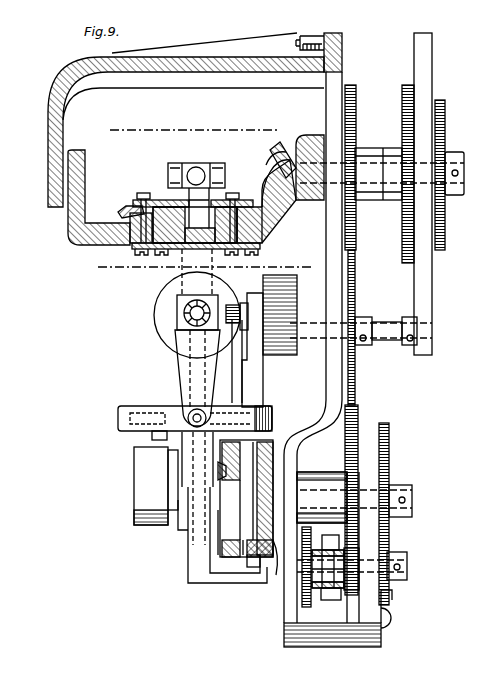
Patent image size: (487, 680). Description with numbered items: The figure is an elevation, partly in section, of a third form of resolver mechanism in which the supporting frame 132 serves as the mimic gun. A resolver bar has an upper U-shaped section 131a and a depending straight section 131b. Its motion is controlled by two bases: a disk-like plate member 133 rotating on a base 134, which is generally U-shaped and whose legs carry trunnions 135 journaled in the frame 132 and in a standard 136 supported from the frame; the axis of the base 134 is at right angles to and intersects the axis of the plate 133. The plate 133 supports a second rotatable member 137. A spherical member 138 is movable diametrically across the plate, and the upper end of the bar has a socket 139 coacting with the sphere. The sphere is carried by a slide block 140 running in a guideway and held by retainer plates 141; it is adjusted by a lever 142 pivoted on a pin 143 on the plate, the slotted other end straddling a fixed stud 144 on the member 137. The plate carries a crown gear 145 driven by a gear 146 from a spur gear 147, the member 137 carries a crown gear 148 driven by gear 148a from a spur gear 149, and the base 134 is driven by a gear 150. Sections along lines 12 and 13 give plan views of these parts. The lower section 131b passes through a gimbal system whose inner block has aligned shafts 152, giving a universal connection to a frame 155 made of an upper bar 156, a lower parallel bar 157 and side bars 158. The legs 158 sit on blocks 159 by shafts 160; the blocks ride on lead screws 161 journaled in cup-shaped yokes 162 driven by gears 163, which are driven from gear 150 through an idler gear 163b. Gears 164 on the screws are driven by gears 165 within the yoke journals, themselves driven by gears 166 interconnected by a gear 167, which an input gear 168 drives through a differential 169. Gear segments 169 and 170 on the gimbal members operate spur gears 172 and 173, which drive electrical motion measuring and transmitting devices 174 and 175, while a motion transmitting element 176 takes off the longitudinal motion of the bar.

The section line 12- 12 is at (315, 276).
The section line 13- 13 is at (280, 124).
The U-shaped section 131a is at (178, 298).
The depending straight section 131b is at (188, 370).
The supporting frame 132 is at (330, 384).
The disk-like plate member 133 is at (183, 250).
The base 134 is at (74, 244).
The trunnions 135 is at (50, 198).
The standard 136 is at (72, 80).
The second rotatable member 137 is at (148, 224).
The spherical member 138 is at (198, 167).
The socket 139 is at (180, 168).
The slide block 140 is at (200, 230).
The retainer plates 141 is at (176, 208).
The lever 142 is at (235, 195).
The pin 143 is at (243, 197).
The fixed stud 144 is at (141, 195).
The crown gear 145 is at (130, 227).
The gear 146 is at (277, 152).
The spur gear 147 is at (409, 266).
The crown gear 148 is at (128, 215).
The gear 148a is at (266, 154).
The spur gear 149 is at (444, 102).
The gear 150 is at (354, 92).
The aligned shafts 152 is at (150, 416).
The frame 155 is at (186, 558).
The upper bar 156 is at (270, 418).
The lower parallel bar 157 is at (200, 592).
The side bars 158 is at (190, 576).
The blocks 159 is at (214, 574).
The shafts 160 is at (185, 528).
The lead screws 161 is at (245, 474).
The cup-shaped yokes 162 is at (276, 578).
The gears 163 is at (356, 428).
The idler gear 163b is at (355, 294).
The gears 164 is at (265, 448).
The gears 165 is at (256, 574).
The gears 166 is at (391, 442).
The gear 167 is at (395, 596).
The input gear 168 is at (306, 587).
The differential 169 is at (236, 378).
The gear segment 170 is at (178, 338).
The spur gear 172 is at (240, 304).
The spur gear 173 is at (190, 318).
The electrical motion measuring and transmitting device 174 is at (297, 335).
The electrical motion measuring and transmitting device 175 is at (160, 322).
The motion transmitting element 176 is at (136, 475).